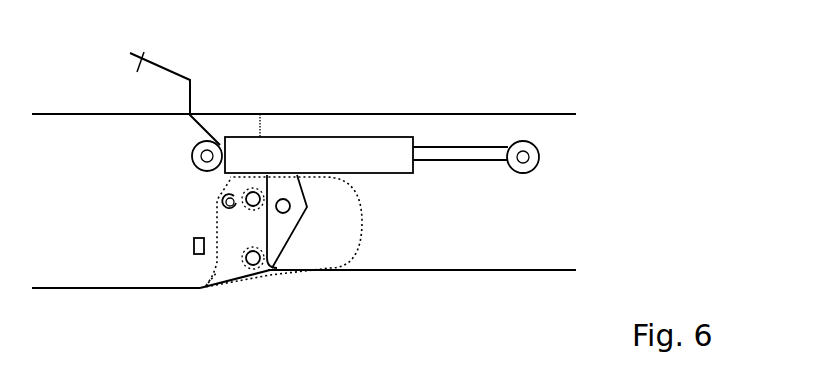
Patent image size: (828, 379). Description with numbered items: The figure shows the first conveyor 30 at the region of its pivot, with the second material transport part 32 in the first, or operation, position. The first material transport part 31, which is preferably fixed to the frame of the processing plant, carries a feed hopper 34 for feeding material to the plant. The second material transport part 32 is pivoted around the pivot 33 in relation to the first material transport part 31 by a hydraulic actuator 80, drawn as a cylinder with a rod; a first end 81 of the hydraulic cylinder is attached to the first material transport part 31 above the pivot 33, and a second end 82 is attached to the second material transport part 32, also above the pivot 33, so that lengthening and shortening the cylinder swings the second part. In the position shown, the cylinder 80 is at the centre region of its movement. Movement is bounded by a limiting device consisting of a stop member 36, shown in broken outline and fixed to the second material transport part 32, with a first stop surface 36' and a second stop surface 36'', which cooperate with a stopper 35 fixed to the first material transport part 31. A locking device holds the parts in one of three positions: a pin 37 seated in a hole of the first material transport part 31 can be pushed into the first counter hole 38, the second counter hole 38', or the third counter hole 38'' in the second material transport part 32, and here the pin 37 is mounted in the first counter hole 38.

The first conveyor 30 is at (93, 34).
The first material transport part 31 is at (68, 170).
The second material transport part 32 is at (556, 227).
The pivot 33 is at (255, 260).
The feed hopper 34 is at (147, 56).
The stopper 35 is at (194, 247).
The stop member 36 is at (338, 232).
The first stop surface 36' is at (165, 273).
The second stop surface 36'' is at (180, 205).
The pin 37 is at (252, 212).
The first counter hole 38 is at (263, 124).
The second counter hole 38' is at (225, 136).
The third counter hole 38'' is at (302, 139).
The hydraulic actuator 80 is at (386, 128).
The first end of the hydraulic cylinder 81 is at (203, 157).
The second end of the hydraulic cylinder 82 is at (525, 156).